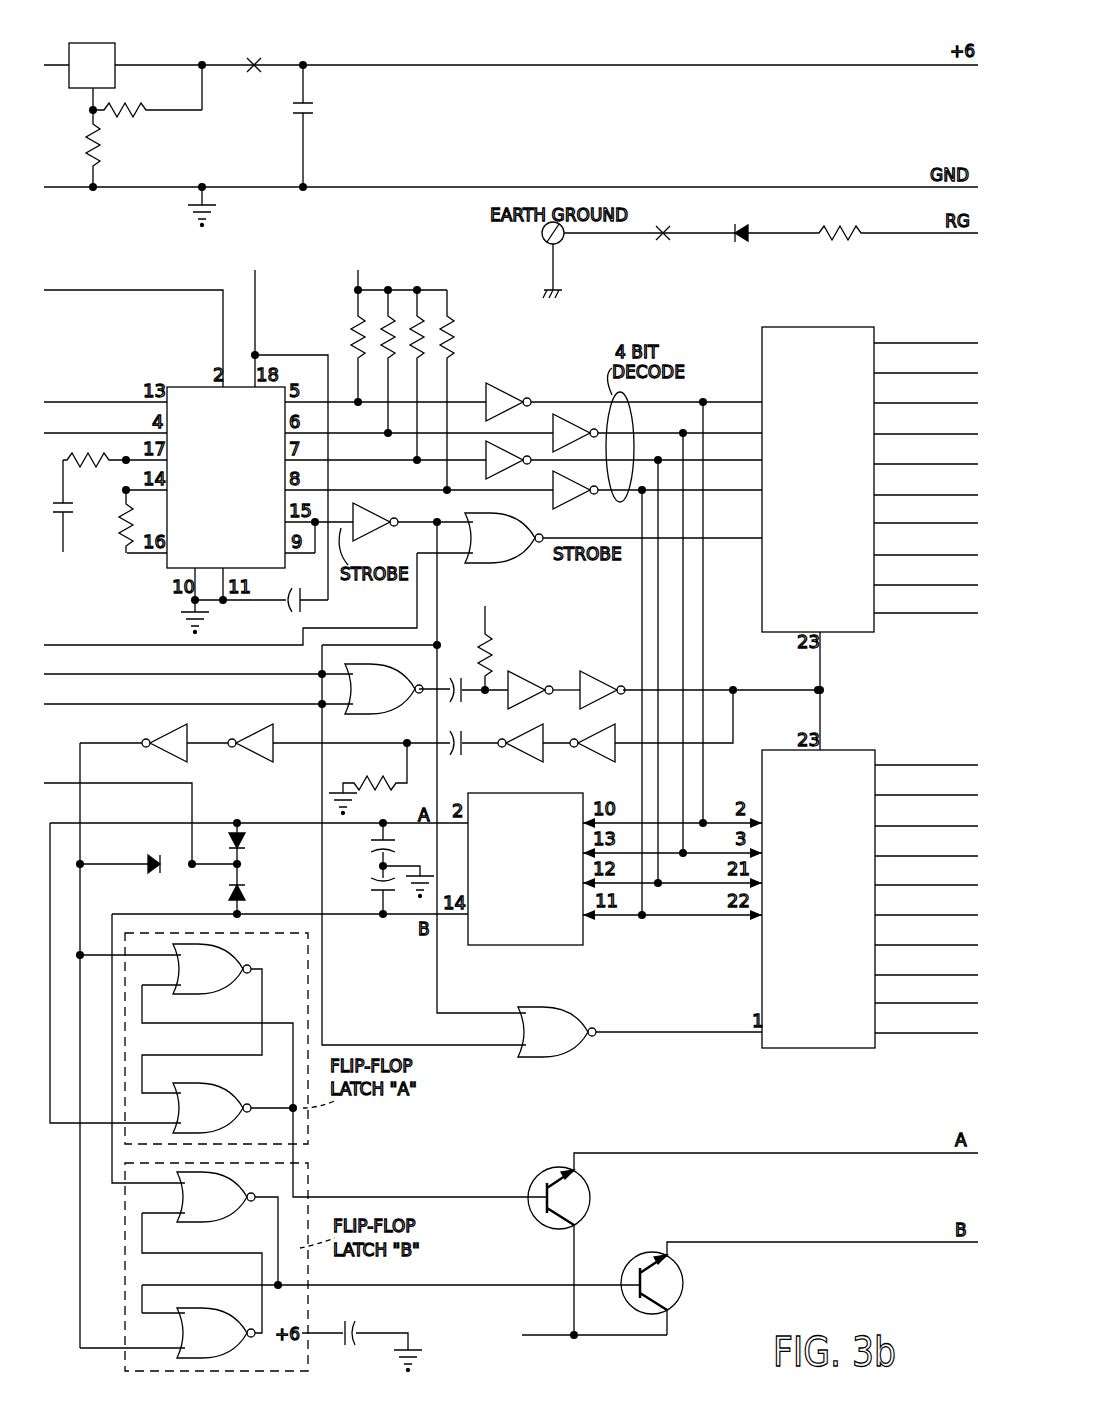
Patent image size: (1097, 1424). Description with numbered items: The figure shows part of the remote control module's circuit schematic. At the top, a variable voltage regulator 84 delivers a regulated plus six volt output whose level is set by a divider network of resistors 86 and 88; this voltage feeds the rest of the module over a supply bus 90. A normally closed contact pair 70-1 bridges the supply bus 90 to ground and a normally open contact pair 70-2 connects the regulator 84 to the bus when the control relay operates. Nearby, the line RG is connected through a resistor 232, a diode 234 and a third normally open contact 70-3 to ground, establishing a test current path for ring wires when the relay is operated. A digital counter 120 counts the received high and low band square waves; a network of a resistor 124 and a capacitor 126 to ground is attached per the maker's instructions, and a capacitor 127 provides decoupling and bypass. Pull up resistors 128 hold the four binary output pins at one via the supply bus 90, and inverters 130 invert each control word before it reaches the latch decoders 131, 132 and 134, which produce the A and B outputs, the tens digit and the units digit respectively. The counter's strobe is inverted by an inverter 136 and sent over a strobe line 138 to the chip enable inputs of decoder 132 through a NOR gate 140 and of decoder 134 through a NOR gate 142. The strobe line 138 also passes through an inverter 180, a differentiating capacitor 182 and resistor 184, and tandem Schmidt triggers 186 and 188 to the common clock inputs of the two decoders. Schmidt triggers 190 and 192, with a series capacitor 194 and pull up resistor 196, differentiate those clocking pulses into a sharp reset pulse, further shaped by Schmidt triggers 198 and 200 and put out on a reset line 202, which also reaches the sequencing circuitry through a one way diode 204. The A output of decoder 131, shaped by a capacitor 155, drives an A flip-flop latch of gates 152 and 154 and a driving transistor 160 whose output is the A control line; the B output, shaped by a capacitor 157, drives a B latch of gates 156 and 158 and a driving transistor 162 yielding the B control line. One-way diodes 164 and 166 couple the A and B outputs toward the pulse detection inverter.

The variable voltage regulator 84 is at (112, 50).
The normally open contact pair 70-2 is at (264, 61).
The resistor 88 is at (155, 115).
The resistor 86 is at (100, 153).
The normally closed contact pair 70-1 is at (316, 112).
The normally open contact 70-3 is at (668, 230).
The diode 234 is at (750, 229).
The resistor 232 is at (858, 229).
The supply bus 90 is at (457, 46).
The digital counter 120 is at (176, 570).
The capacitor 127 is at (284, 606).
The resistor 124 is at (93, 455).
The capacitor 126 is at (63, 518).
The driving transistor 162 is at (123, 542).
The pull up resistors 128 is at (368, 338).
The inverters 130 is at (510, 392).
The inverter 136 is at (378, 507).
The strobe line 138 is at (440, 600).
The NOR gate 140 is at (500, 562).
The latch decoder 132 is at (855, 632).
The latch decoder 134 is at (860, 1048).
The latch decoder 131 is at (572, 940).
The NOR gate 142 is at (560, 1014).
The inverter 180 is at (360, 713).
The differentiating capacitor 182 is at (460, 700).
The resistor 184 is at (490, 658).
The Schmidt trigger 186 is at (530, 672).
The Schmidt trigger 188 is at (598, 672).
The Schmidt trigger 190 is at (598, 762).
The Schmidt trigger 192 is at (533, 763).
The series capacitor 194 is at (460, 757).
The pull up resistor 196 is at (374, 770).
The Schmidt trigger 198 is at (268, 758).
The Schmidt trigger 200 is at (186, 752).
The reset line 202 is at (97, 750).
The one way diode 204 is at (140, 860).
The one-way diode 164 is at (247, 843).
The one-way diode 166 is at (247, 892).
The capacitor 155 is at (376, 847).
The capacitor 157 is at (372, 892).
The gate 152 is at (200, 992).
The gate 154 is at (206, 1090).
The gate 156 is at (210, 1218).
The gate 158 is at (207, 1316).
The driving transistor 160 is at (592, 1199).